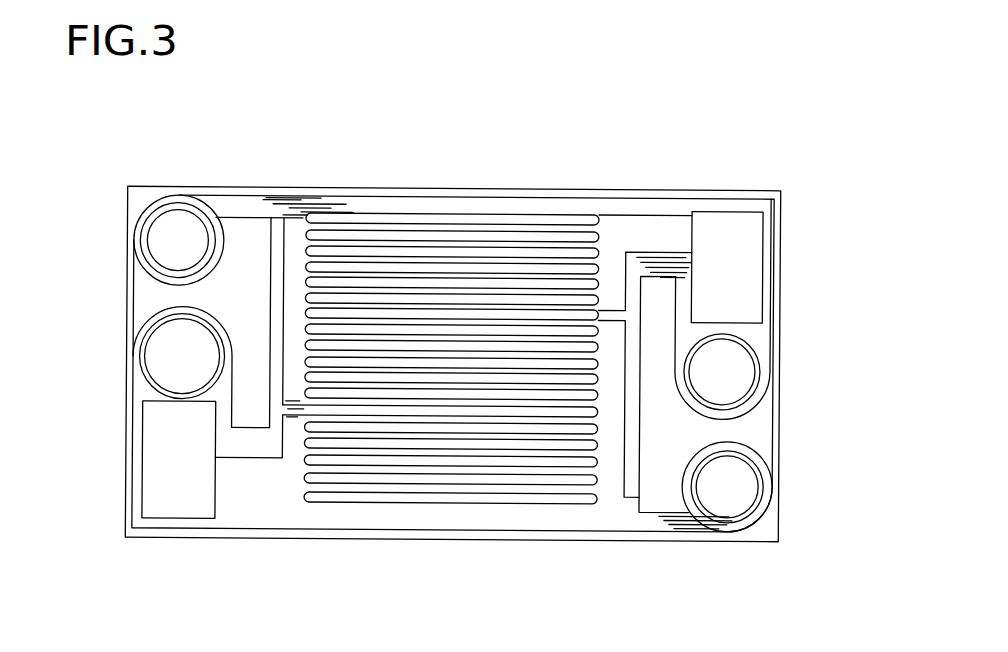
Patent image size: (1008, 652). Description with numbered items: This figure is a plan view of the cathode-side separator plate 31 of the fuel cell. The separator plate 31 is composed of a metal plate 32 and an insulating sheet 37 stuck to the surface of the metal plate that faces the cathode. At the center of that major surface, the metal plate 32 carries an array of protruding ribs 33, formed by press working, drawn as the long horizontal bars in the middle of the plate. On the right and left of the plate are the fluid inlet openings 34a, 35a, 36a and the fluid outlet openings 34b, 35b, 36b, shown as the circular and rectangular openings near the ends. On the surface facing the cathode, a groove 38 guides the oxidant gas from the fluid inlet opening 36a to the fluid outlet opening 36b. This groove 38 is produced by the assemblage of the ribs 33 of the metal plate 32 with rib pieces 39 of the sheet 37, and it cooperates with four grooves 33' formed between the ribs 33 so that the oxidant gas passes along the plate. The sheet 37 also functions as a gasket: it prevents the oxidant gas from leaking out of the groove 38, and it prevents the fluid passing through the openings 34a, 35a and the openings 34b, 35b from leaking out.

The cathode-side separator plate 31 is at (358, 188).
The metal plate 32 is at (760, 196).
The protruding ribs 33 is at (440, 366).
The grooves 33' is at (451, 366).
The fluid inlet opening 34a is at (738, 491).
The fluid outlet opening 34b is at (173, 245).
The fluid inlet opening 35a is at (733, 378).
The fluid outlet opening 35b is at (182, 357).
The fluid inlet opening 36a is at (740, 270).
The fluid outlet opening 36b is at (178, 470).
The insulating sheet 37 is at (240, 207).
The groove 38 is at (613, 230).
The rib pieces 39 is at (610, 312).